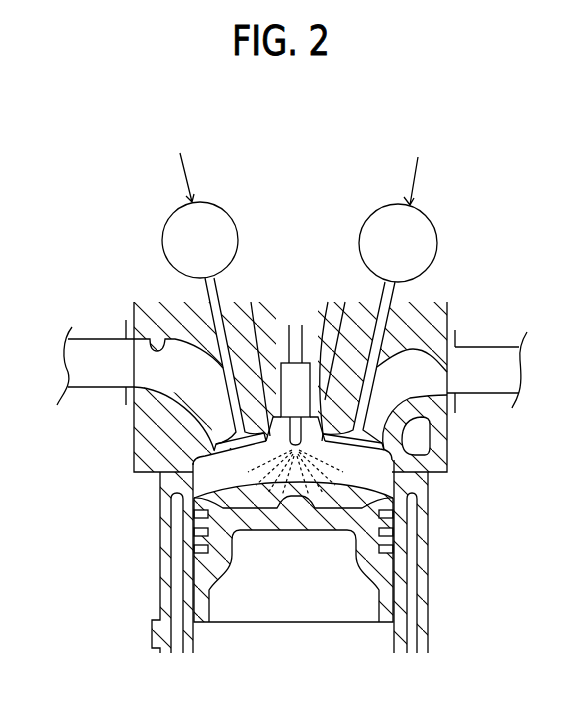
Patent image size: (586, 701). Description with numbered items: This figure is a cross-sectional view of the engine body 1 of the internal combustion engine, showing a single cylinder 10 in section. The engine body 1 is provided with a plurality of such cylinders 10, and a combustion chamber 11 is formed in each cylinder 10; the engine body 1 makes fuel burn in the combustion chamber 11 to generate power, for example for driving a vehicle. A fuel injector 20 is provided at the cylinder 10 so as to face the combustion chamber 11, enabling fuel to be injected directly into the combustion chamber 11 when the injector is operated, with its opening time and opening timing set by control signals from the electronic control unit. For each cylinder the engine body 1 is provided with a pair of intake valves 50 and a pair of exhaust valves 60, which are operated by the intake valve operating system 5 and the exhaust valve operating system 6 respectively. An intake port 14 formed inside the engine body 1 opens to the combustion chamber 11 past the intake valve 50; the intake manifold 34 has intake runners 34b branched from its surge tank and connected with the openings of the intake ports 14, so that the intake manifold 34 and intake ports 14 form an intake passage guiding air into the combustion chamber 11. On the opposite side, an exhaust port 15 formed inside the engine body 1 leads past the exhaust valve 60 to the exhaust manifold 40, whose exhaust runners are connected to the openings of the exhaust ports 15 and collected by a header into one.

The engine body 1 is at (161, 581).
The intake valve operating system 5 is at (214, 203).
The exhaust valve operating system 6 is at (432, 218).
The cylinder 10 is at (202, 493).
The combustion chamber 11 is at (363, 465).
The intake port 14 is at (150, 338).
The exhaust port 15 is at (447, 372).
The fuel injector 20 is at (297, 384).
The intake manifold 34 is at (84, 400).
The intake runner 34b is at (90, 388).
The exhaust manifold 40 is at (483, 394).
The intake valve 50 is at (238, 330).
The exhaust valve 60 is at (380, 317).